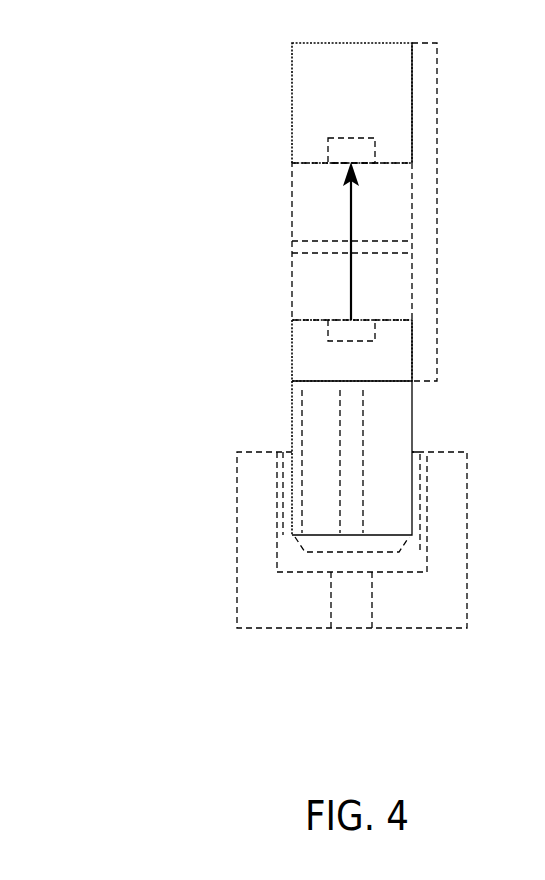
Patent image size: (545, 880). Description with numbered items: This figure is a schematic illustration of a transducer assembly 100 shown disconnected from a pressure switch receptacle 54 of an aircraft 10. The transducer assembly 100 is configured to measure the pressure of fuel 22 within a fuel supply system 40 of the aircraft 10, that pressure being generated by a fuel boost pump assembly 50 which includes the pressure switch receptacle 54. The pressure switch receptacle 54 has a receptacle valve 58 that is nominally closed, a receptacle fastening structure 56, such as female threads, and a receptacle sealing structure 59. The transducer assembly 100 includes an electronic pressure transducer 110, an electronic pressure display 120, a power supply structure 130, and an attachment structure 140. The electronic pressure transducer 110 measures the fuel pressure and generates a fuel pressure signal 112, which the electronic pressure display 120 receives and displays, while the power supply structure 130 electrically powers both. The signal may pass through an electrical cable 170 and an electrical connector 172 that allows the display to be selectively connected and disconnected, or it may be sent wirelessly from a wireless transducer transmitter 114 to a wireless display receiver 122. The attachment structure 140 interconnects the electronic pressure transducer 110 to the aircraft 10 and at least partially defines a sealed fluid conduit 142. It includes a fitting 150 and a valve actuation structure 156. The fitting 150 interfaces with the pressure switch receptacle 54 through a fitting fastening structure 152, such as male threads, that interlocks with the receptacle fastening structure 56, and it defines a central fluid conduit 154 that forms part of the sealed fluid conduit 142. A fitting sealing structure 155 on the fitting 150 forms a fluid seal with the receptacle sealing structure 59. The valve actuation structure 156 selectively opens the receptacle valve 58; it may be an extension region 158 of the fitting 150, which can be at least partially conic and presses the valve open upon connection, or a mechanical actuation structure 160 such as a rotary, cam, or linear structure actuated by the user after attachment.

The aircraft 10 is at (184, 707).
The fuel 22 is at (352, 618).
The fuel supply system 40 is at (259, 659).
The fuel boost pump assembly 50 is at (235, 630).
The pressure switch receptacle 54 is at (237, 600).
The receptacle fastening structure 56 is at (277, 480).
The receptacle valve 58 is at (427, 565).
The receptacle sealing structure 59 is at (430, 520).
The transducer assembly 100 is at (129, 114).
The electronic pressure transducer 110 is at (293, 352).
The fuel pressure signal 112 is at (351, 295).
The wireless transducer transmitter 114 is at (342, 341).
The electronic pressure display 120 is at (293, 104).
The wireless display receiver 122 is at (350, 138).
The power supply structure 130 is at (437, 210).
The attachment structure 140 is at (229, 413).
The sealed fluid conduit 142 is at (363, 410).
The fitting 150 is at (293, 393).
The fitting fastening structure 152 is at (417, 481).
The central fluid conduit 154 is at (362, 443).
The fitting sealing structure 155 is at (412, 552).
The valve actuation structure 156 is at (269, 516).
The extension region 158 is at (290, 541).
The mechanical actuation structure 160 is at (292, 443).
The electrical cable 170 is at (293, 187).
The electrical connector 172 is at (292, 247).